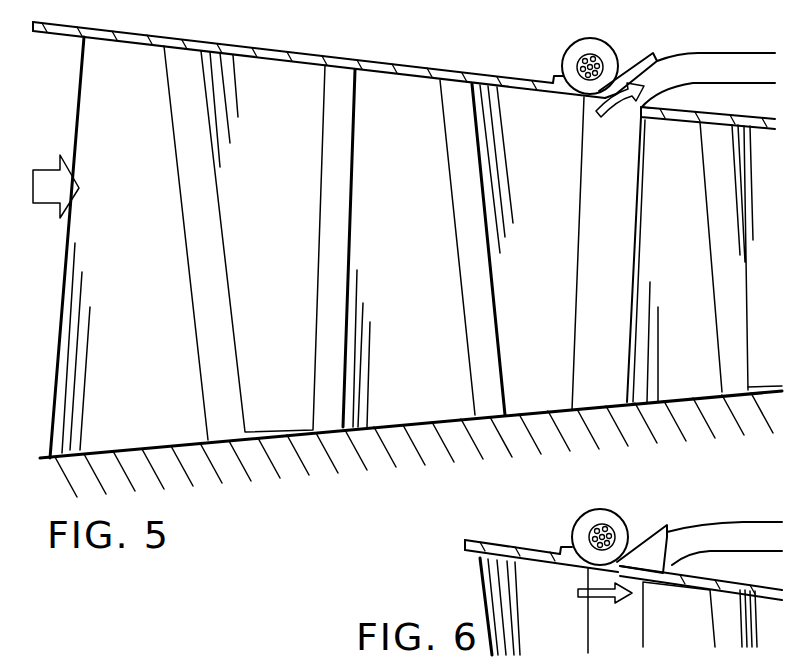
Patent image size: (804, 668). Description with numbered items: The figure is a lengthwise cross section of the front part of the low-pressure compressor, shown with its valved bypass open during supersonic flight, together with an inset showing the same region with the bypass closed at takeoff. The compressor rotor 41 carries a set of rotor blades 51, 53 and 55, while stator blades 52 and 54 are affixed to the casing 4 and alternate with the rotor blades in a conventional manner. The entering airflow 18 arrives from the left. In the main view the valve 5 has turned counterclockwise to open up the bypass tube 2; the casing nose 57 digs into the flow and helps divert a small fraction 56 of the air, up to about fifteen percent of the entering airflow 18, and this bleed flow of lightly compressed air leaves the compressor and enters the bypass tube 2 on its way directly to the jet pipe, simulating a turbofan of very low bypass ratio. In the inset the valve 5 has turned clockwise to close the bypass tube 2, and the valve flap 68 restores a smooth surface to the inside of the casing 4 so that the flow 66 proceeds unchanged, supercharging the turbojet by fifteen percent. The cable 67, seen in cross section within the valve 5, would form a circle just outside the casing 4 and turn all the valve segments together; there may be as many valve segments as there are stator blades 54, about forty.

In FIG. 5, the bypass tube 2 is at (728, 53).
In FIG. 6, the bypass tube 2 is at (743, 522).
In FIG. 5, the LP compressor casing 4 is at (516, 83).
In FIG. 6, the LP compressor casing 4 is at (531, 552).
In FIG. 5, the valve 5 is at (615, 59).
In FIG. 6, the valve 5 is at (627, 523).
In FIG. 5, the airflow 18 is at (48, 187).
In FIG. 5, the compressor rotor 41 is at (298, 478).
In FIG. 5, the rotor blade 51 is at (113, 241).
In FIG. 5, the stator blade 52 is at (257, 239).
In FIG. 5, the rotor blade 53 is at (385, 240).
In FIG. 5, the stator blade 54 is at (520, 241).
In FIG. 6, the stator blade 54 is at (532, 643).
In FIG. 5, the rotor blade 55 is at (660, 239).
In FIG. 5, the bypass flow 56 is at (609, 117).
In FIG. 5, the casing nose 57 is at (656, 109).
In FIG. 6, the flow 66 is at (622, 600).
In FIG. 6, the cable 67 is at (594, 533).
In FIG. 6, the valve flap 68 is at (646, 549).